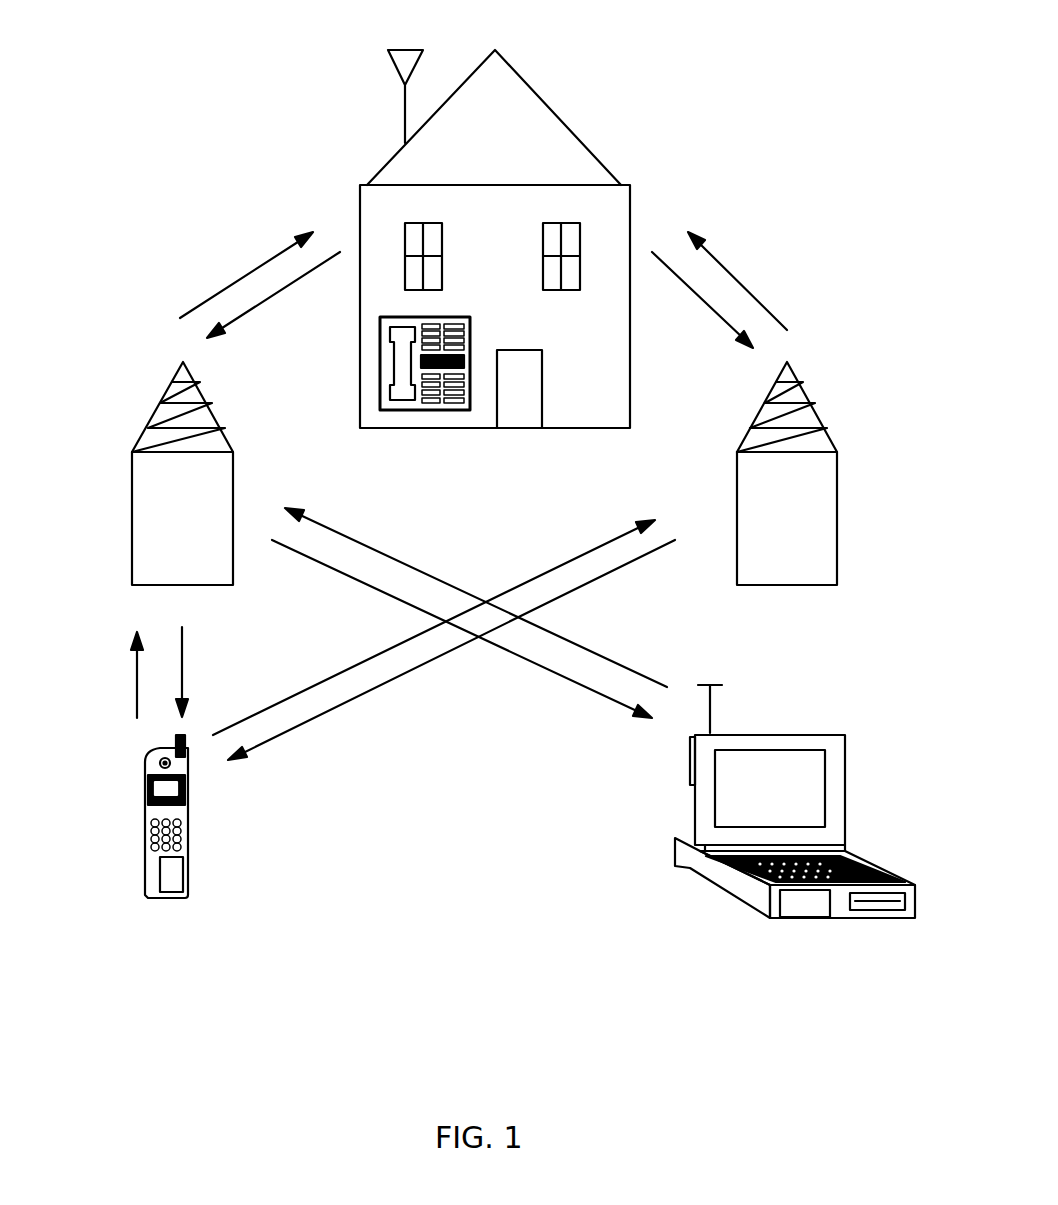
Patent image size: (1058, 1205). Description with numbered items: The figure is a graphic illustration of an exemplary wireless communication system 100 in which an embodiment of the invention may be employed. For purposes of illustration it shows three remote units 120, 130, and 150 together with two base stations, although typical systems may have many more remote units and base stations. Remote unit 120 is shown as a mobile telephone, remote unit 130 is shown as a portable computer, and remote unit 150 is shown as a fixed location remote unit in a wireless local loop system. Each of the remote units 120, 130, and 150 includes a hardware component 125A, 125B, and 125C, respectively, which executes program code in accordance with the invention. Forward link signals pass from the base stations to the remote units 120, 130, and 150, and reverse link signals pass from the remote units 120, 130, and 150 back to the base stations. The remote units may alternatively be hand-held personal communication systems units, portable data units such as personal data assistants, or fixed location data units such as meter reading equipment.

The wireless communication system 100 is at (192, 88).
The remote unit 120 is at (143, 806).
The hardware component 125A is at (178, 875).
The hardware component 125B is at (438, 400).
The hardware component 125C is at (805, 902).
The remote unit 130 is at (808, 742).
The remote unit 150 is at (380, 383).